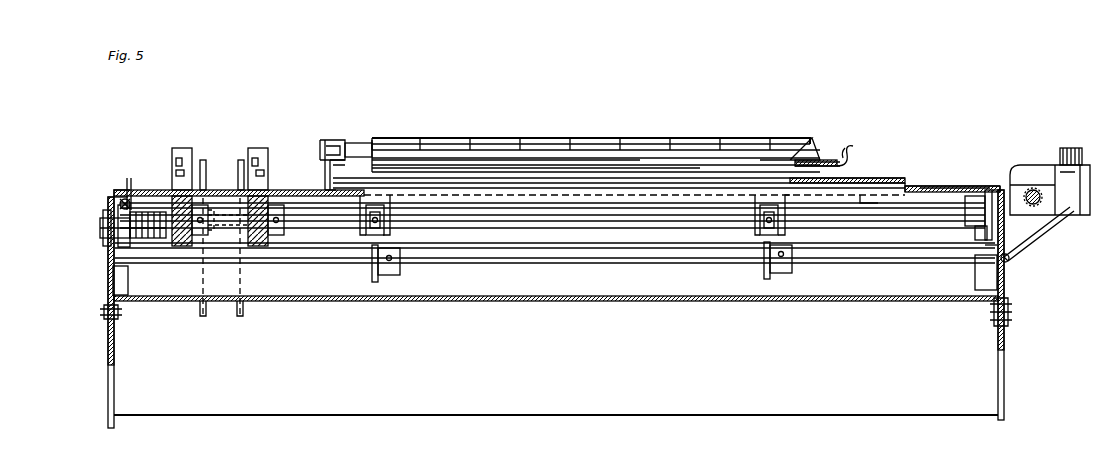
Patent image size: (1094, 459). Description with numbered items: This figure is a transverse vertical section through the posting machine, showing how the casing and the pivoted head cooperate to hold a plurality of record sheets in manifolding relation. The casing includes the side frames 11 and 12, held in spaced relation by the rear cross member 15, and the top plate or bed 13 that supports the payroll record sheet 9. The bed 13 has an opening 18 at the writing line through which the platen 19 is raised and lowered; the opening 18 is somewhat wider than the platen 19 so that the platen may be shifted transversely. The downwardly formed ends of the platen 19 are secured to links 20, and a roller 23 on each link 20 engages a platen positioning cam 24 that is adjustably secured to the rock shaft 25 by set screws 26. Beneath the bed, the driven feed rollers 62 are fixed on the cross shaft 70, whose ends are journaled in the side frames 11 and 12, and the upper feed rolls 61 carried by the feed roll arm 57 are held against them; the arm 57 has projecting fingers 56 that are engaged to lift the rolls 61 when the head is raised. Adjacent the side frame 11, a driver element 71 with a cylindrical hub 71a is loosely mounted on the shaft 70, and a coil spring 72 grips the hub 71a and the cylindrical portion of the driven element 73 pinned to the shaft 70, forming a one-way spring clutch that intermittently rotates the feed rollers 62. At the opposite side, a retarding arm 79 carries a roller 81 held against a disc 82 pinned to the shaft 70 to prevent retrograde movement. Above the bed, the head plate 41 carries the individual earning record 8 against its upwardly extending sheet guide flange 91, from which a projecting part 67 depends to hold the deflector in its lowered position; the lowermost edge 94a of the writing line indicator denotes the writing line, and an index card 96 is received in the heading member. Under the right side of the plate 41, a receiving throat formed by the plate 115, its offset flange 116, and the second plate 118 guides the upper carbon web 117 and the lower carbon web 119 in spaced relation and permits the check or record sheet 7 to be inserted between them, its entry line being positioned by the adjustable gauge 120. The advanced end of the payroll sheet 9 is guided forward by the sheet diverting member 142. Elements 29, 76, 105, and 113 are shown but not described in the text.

The check or record sheet 7 is at (936, 186).
The individual earning record 8 is at (596, 155).
The payroll record sheet 9 is at (146, 194).
The side frame 11 is at (108, 345).
The side frame 12 is at (1004, 349).
The top plate or bed 13 is at (943, 188).
The rear cross member 15 is at (556, 397).
The opening 18 is at (308, 188).
The platen 19 is at (626, 201).
The links 20 is at (366, 234).
The roller 23 is at (384, 208).
The platen positioning cam 24 is at (384, 238).
The rock shaft 25 is at (556, 259).
The set screws 26 is at (389, 258).
The lock nut 29 is at (118, 200).
The support or plate 41 is at (814, 163).
The projecting fingers 56 is at (206, 316).
The feed roll arm 57 is at (204, 160).
The upper feed rolls 61 is at (182, 148).
The driven feed rollers 62 is at (165, 207).
The projecting part 67 is at (334, 178).
The cross shaft 70 is at (516, 222).
The driver element 71 is at (122, 245).
The cylindrical hub 71a is at (122, 216).
The coil spring 72 is at (156, 238).
The driven element 73 is at (142, 190).
The pin 76 is at (128, 204).
The arm 79 is at (1000, 283).
The roller 81 is at (975, 236).
The disc 82 is at (985, 195).
The sheet guide flange 91 is at (336, 152).
The lowermost edge of the indicator 94a is at (370, 140).
The index card 96 is at (754, 135).
The deflector 105 is at (797, 160).
The base 113 is at (286, 456).
The plate 115 is at (850, 154).
The offset flange 116 is at (814, 160).
The upper carbon web 117 is at (686, 167).
The second plate 118 is at (888, 178).
The lower carbon web 119 is at (638, 185).
The adjustable gauge 120 is at (1078, 212).
The sheet diverting member 142 is at (684, 301).